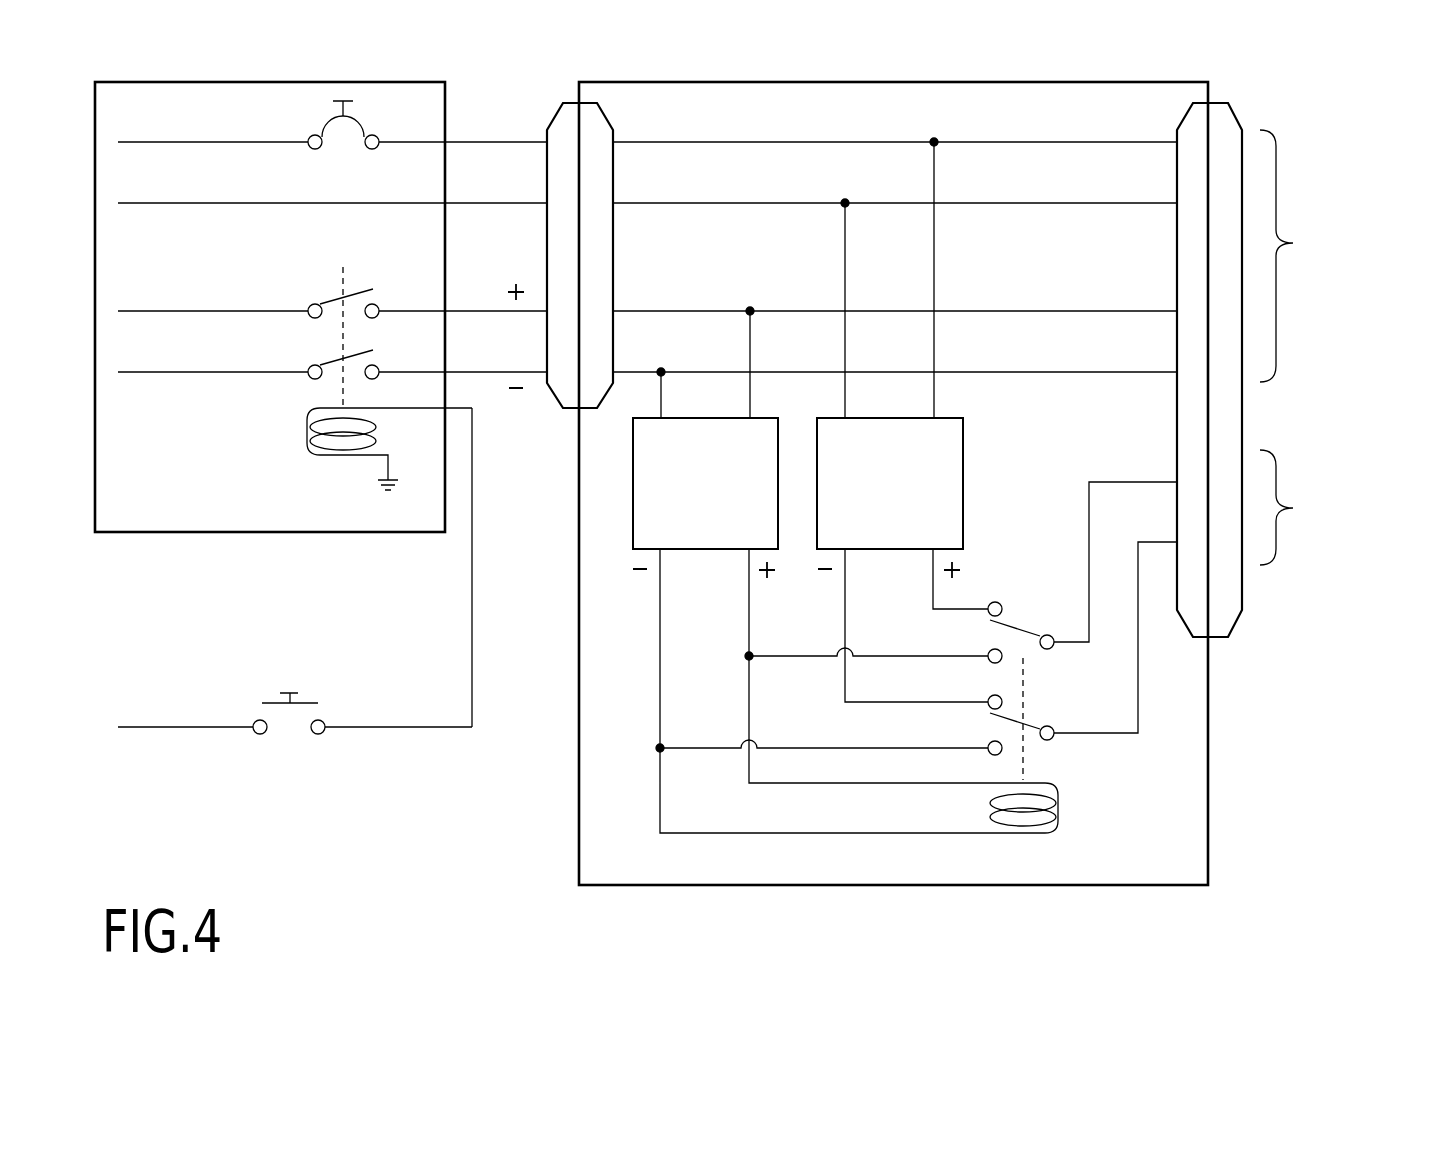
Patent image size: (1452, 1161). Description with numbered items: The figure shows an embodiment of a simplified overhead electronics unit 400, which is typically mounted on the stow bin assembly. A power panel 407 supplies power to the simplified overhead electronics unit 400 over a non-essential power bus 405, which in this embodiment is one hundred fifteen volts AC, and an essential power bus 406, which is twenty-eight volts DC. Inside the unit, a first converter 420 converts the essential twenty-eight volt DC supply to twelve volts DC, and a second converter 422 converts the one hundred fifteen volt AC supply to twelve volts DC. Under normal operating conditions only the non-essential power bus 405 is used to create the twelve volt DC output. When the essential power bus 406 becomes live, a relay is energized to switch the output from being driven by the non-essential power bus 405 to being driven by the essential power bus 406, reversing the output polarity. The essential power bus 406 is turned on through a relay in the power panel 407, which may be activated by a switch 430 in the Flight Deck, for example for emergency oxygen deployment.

The simplified overhead electronics unit 400 is at (1208, 790).
The non-essential power bus 405 is at (400, 172).
The essential power bus 406 is at (413, 340).
The power panel 407 is at (340, 535).
The first converter 420 is at (707, 552).
The second converter 422 is at (893, 552).
The switch 430 is at (323, 715).